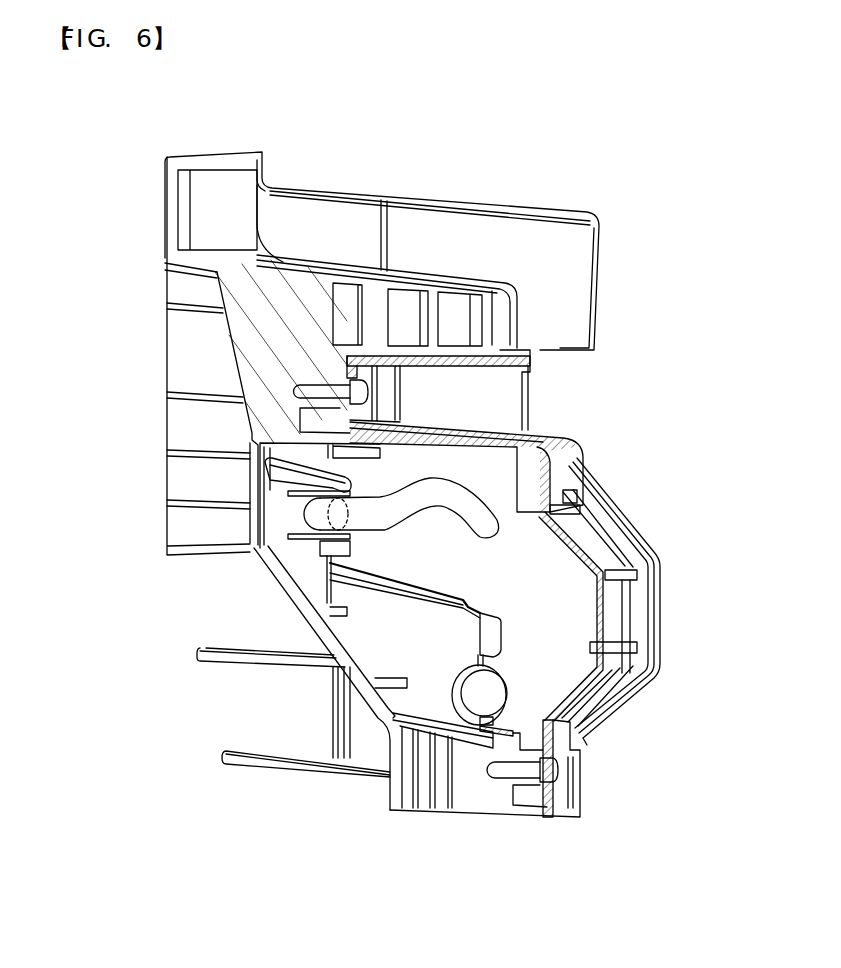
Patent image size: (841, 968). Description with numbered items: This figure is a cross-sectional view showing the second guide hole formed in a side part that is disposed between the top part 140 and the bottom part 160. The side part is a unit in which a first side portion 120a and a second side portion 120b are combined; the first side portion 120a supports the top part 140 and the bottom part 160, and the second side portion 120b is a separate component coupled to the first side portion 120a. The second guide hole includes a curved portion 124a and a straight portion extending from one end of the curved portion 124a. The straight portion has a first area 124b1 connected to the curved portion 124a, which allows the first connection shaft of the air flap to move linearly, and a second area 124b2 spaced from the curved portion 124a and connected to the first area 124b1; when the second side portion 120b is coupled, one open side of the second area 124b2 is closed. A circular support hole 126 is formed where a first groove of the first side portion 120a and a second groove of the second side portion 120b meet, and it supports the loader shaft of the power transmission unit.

The top part 140 is at (225, 152).
The first side portion 120a is at (263, 368).
The second side portion 120b is at (580, 537).
The second area 124b2 is at (328, 500).
The first area 124b1 is at (350, 540).
The curved portion 124a is at (437, 497).
The support hole 126 is at (478, 696).
The bottom part 160 is at (500, 800).